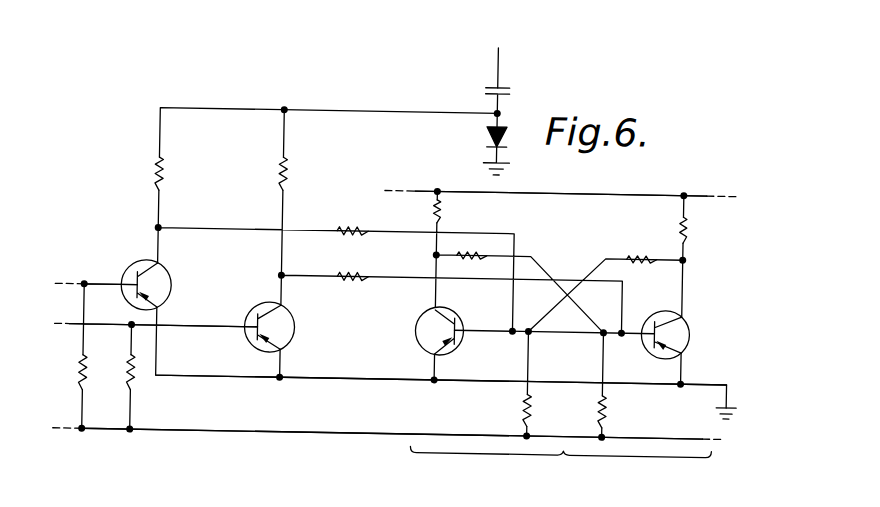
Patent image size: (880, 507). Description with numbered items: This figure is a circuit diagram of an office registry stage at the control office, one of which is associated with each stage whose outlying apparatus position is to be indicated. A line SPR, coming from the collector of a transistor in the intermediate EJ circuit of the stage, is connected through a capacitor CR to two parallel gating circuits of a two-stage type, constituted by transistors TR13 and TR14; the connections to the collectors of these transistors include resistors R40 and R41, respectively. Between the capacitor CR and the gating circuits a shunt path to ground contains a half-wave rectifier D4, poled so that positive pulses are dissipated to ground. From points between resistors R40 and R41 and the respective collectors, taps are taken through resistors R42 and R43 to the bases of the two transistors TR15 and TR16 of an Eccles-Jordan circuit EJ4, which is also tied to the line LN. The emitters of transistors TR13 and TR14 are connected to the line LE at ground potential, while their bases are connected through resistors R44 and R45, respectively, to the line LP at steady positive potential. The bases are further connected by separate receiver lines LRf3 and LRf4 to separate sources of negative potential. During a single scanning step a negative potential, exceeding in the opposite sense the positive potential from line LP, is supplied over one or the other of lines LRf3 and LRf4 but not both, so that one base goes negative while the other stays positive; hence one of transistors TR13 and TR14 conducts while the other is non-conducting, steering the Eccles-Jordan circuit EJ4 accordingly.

The line SPR is at (517, 68).
The capacitor CR is at (511, 101).
The half-wave rectifier D4 is at (481, 134).
The line N LN is at (592, 189).
The line LE is at (364, 386).
The line LP is at (354, 443).
The receiver line LRf3 is at (100, 271).
The receiver line LRf4 is at (80, 336).
The resistor R40 is at (151, 183).
The resistor R41 is at (276, 181).
The resistor R42 is at (353, 220).
The resistor R43 is at (348, 266).
The resistor R44 is at (88, 364).
The resistor R45 is at (136, 382).
The transistor TR13 is at (172, 285).
The transistor TR14 is at (296, 331).
The transistor TR15 is at (416, 331).
The transistor TR16 is at (671, 309).
The Eccles-Jordan circuit EJ4 is at (561, 469).